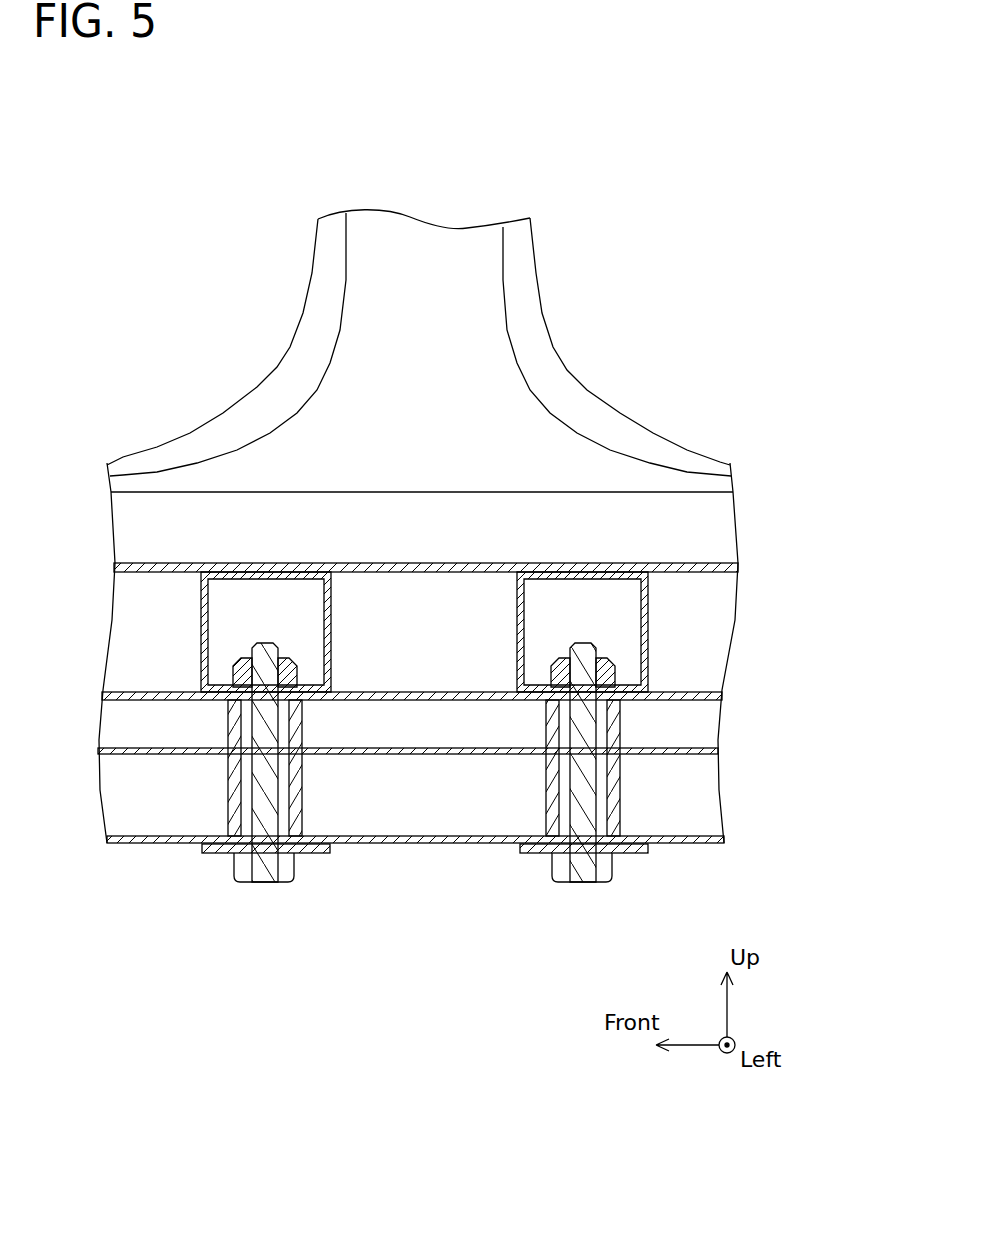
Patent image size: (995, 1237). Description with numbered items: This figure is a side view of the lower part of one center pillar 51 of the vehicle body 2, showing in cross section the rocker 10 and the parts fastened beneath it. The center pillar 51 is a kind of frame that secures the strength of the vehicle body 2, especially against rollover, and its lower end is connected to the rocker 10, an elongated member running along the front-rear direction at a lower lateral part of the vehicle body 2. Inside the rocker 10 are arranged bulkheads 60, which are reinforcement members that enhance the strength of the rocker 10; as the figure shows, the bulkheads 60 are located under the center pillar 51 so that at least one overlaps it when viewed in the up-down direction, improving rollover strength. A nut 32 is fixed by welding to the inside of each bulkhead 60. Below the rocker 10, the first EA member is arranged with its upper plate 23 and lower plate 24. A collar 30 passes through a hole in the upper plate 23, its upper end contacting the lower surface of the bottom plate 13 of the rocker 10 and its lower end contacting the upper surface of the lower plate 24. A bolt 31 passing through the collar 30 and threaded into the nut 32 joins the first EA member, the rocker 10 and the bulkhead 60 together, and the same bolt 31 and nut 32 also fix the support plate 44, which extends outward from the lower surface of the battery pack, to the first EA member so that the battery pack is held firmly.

The vehicle body 2 is at (172, 252).
The center pillar 51 is at (637, 432).
The rocker 10 is at (698, 565).
The bulkhead 60 is at (201, 618).
The nut 32 is at (233, 672).
The bottom plate 13 is at (120, 700).
The upper plate 23 is at (132, 755).
The lower plate 24 is at (122, 843).
The collar 30 is at (226, 802).
The support plate 44 is at (222, 853).
The bolt 31 is at (280, 882).